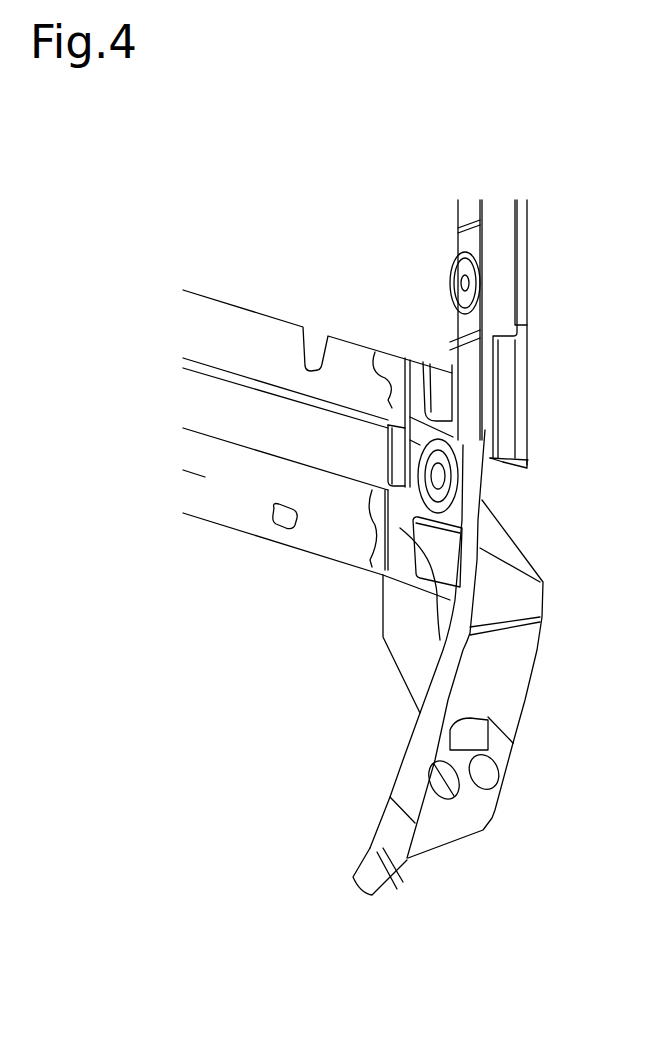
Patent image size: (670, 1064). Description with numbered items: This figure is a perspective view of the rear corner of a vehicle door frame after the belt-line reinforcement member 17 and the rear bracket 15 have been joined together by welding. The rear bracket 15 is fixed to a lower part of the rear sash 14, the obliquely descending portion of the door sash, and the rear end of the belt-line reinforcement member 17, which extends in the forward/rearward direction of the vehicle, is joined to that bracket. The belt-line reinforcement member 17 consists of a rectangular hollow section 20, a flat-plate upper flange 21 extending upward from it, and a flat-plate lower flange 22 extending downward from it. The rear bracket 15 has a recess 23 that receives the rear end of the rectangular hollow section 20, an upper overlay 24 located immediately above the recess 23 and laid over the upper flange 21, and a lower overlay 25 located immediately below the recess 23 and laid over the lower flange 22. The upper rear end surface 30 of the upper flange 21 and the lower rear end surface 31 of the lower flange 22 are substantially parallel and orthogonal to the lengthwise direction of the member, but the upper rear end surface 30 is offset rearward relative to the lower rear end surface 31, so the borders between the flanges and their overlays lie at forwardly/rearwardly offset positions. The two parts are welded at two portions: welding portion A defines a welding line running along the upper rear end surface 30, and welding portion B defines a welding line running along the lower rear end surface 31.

The rear sash 14 is at (508, 287).
The rear bracket 15 is at (453, 827).
The belt-line reinforcement member 17 is at (197, 288).
The rectangular hollow section 20 is at (272, 437).
The upper flange 21 is at (260, 333).
The lower flange 22 is at (205, 492).
The recess 23 is at (390, 445).
The upper overlay 24 is at (448, 366).
The lower overlay 25 is at (392, 660).
The upper rear end surface 30 is at (425, 360).
The lower rear end surface 31 is at (395, 585).
The welding portion A is at (380, 380).
The welding portion B is at (370, 522).